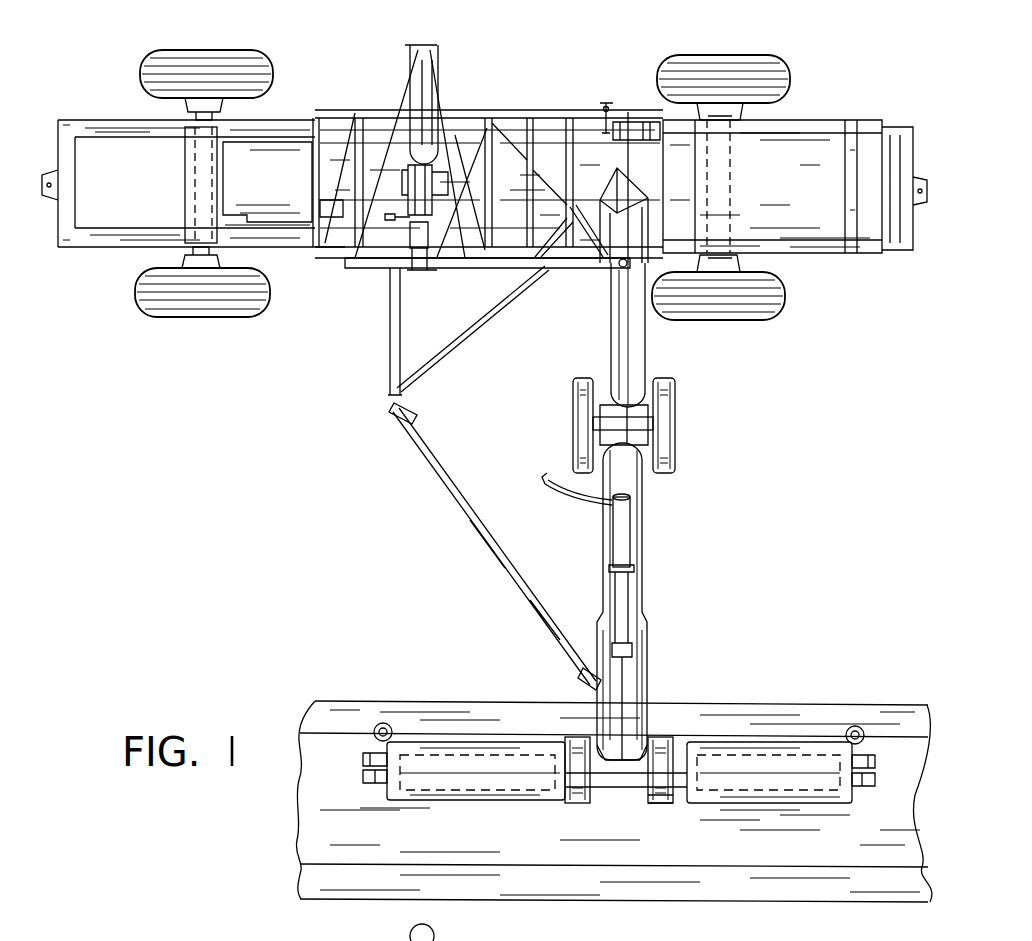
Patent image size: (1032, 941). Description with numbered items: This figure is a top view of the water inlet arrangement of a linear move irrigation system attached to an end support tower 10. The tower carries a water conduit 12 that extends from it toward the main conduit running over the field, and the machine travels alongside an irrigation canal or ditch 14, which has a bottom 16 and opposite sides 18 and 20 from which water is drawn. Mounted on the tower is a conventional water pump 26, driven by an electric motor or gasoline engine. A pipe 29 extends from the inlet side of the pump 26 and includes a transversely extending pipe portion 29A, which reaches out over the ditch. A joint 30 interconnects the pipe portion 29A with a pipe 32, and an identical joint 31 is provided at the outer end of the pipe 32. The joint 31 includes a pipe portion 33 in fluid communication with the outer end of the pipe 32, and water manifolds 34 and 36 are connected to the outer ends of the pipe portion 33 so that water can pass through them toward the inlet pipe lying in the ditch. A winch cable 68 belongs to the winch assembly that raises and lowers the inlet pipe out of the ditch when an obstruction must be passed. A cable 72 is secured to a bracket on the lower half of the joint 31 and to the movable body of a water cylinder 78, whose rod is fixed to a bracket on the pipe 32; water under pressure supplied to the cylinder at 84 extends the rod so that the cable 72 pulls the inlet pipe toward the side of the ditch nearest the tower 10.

The end support tower 10 is at (292, 63).
The water conduit 12 is at (433, 67).
The irrigation canal or ditch 14 is at (816, 696).
The bottom 16 is at (327, 838).
The side 18 is at (342, 720).
The side 20 is at (335, 885).
The water pump 26 is at (420, 187).
The pipe 29 is at (557, 158).
The pipe portion 29A is at (607, 312).
The joint 30 is at (682, 453).
The joint 31 is at (663, 810).
The pipe 32 is at (640, 588).
The pipe portion 33 is at (623, 790).
The water manifold 34 is at (566, 737).
The water manifold 36 is at (670, 735).
The winch cable 68 is at (618, 342).
The cable 72 is at (643, 727).
The water cylinder 78 is at (647, 550).
The water supply point 84 is at (578, 502).